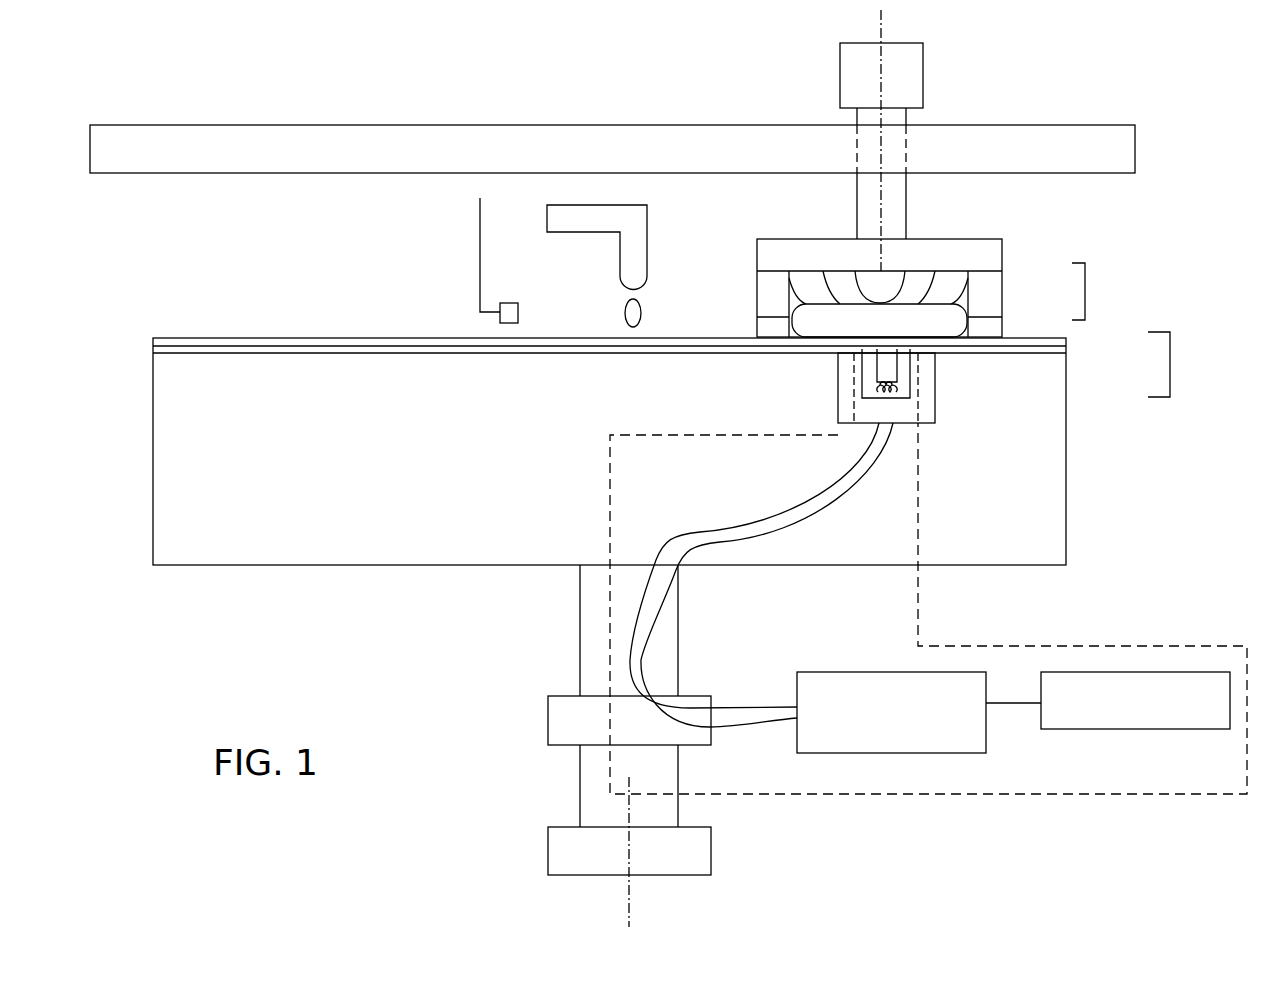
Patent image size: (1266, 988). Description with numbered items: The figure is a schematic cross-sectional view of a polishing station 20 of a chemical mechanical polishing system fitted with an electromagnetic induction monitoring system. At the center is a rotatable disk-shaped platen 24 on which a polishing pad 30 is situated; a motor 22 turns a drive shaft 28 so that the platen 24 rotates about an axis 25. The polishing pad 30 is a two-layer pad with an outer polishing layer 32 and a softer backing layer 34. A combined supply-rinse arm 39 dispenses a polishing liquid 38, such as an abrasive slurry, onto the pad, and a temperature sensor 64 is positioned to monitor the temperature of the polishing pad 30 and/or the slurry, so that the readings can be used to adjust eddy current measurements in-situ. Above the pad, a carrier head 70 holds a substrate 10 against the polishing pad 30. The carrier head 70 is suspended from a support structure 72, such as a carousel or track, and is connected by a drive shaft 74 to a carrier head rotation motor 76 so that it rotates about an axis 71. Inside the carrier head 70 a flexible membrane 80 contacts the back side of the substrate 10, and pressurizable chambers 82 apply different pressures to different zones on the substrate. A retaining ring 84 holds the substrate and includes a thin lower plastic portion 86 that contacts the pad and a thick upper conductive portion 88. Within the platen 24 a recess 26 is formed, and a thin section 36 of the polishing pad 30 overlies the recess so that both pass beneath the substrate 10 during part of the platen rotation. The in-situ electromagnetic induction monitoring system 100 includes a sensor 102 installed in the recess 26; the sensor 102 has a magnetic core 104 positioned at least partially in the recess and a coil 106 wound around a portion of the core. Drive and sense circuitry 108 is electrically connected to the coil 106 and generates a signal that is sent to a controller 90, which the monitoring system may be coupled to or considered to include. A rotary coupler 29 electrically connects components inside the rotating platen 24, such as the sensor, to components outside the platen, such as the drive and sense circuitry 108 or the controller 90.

The substrate 10 is at (879, 320).
The polishing station 20 is at (178, 88).
The motor 22 is at (711, 857).
The platen 24 is at (1066, 480).
The axis 25 is at (630, 897).
The recess 26 is at (937, 407).
The drive shaft 28 is at (580, 631).
The rotary coupler 29 is at (548, 719).
The polishing pad 30 is at (1170, 365).
The polishing layer 32 is at (1066, 341).
The backing layer 34 is at (1066, 349).
The thin section 36 is at (858, 367).
The polishing liquid 38 is at (625, 313).
The supply-rinse arm 39 is at (620, 255).
The temperature sensor 64 is at (498, 314).
The carrier head 70 is at (740, 262).
The axis 71 is at (881, 22).
The support structure 72 is at (1100, 125).
The drive shaft 74 is at (861, 216).
The carrier head rotation motor 76 is at (840, 85).
The flexible membrane 80 is at (938, 283).
The pressurizable chambers 82 is at (878, 287).
The retaining ring 84 is at (1085, 292).
The lower plastic portion 86 is at (1002, 330).
The upper conductive portion 88 is at (1002, 303).
The controller 90 is at (1138, 729).
The in-situ electromagnetic induction monitoring system 100 is at (1135, 646).
The sensor 102 is at (907, 405).
The magnetic core 104 is at (912, 383).
The coil 106 is at (876, 394).
The drive and sense circuitry 108 is at (797, 690).